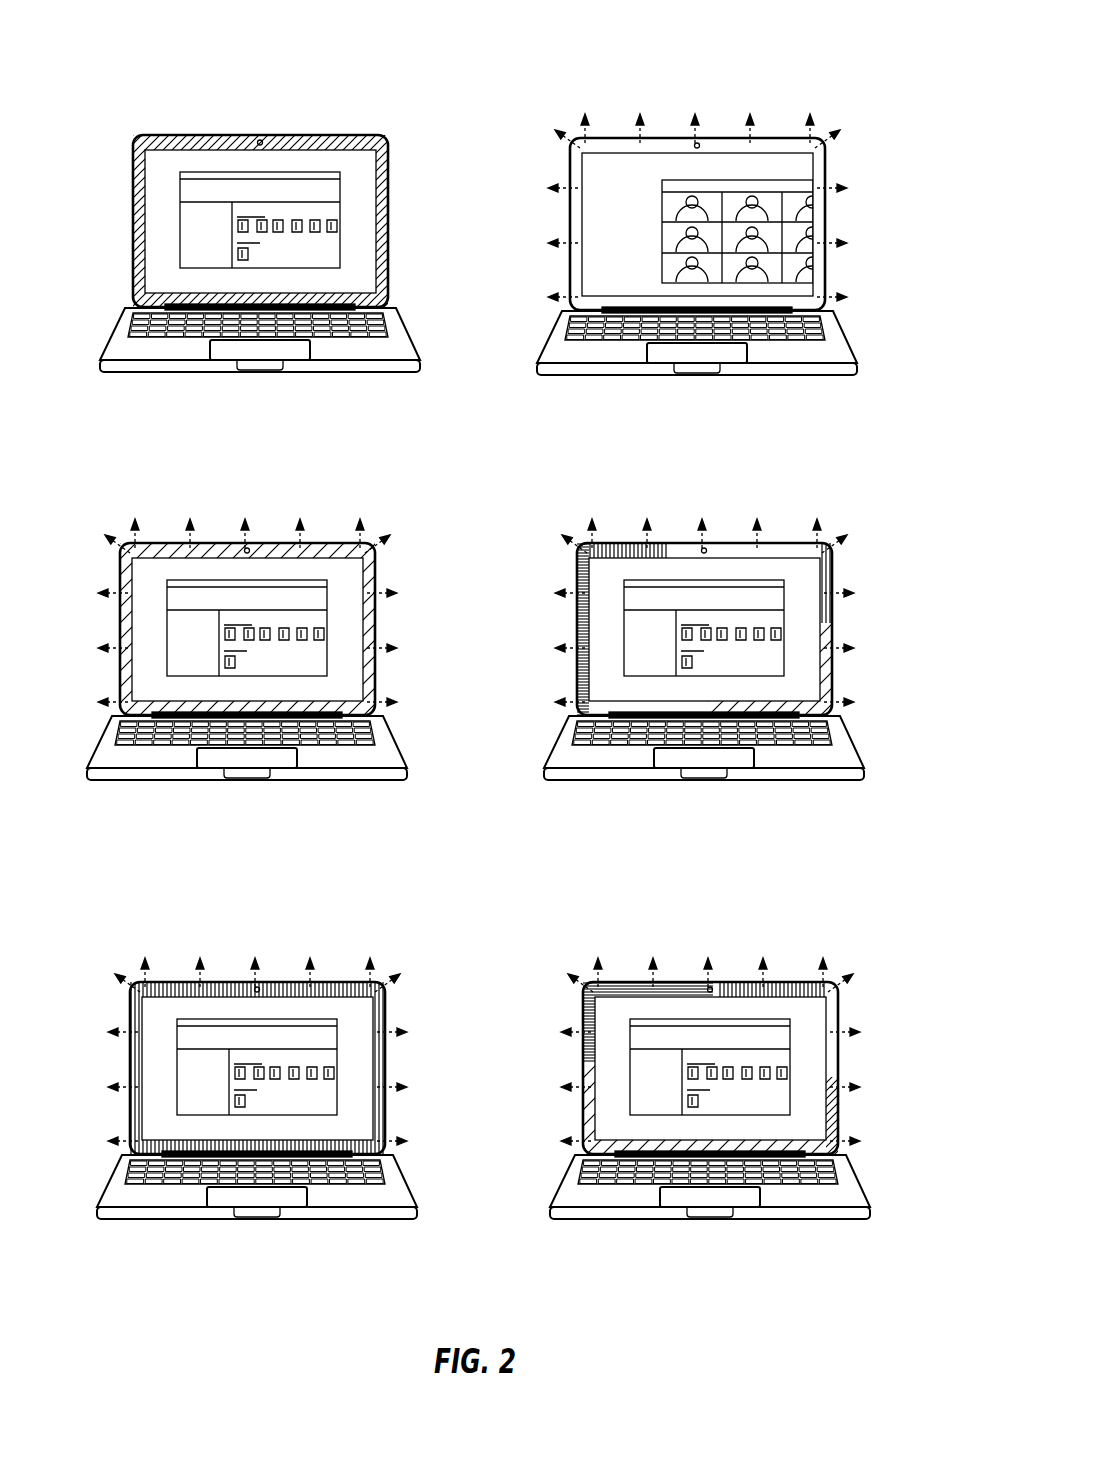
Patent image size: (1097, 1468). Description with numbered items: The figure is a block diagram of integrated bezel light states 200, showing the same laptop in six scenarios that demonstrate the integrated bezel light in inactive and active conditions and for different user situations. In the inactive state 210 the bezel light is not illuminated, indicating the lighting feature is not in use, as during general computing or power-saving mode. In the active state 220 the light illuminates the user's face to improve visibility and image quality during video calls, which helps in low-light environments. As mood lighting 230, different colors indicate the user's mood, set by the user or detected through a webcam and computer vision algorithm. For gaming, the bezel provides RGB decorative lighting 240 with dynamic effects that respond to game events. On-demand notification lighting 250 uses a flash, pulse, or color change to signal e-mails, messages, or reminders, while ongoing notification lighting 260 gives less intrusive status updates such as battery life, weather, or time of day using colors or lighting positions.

The integrated bezel light states 200 is at (843, 38).
The inactive state 210 is at (191, 134).
The active state 220 is at (622, 148).
The mood lighting 230 is at (173, 543).
The RGB decorative lighting 240 is at (632, 545).
The on-demand notification lighting 250 is at (185, 982).
The ongoing notification lighting 260 is at (638, 982).